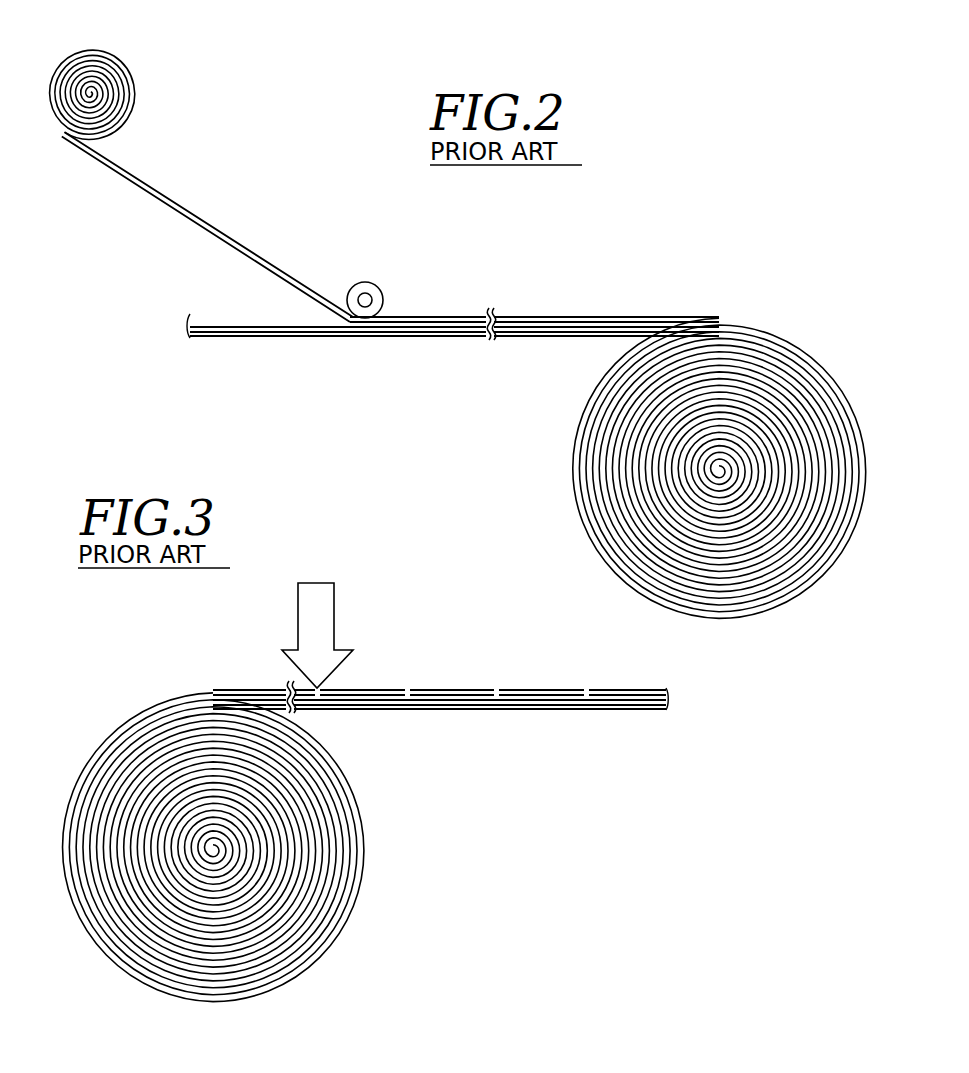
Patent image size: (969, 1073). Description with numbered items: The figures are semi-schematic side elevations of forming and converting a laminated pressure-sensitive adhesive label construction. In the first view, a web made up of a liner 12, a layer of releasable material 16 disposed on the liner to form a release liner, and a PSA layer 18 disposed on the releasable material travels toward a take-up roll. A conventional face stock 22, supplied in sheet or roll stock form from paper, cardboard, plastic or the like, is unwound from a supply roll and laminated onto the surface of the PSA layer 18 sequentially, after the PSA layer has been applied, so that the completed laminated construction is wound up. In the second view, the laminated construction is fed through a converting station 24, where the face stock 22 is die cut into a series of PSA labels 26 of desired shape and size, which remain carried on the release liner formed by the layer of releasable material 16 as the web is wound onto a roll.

In FIG. 2, the liner 12 is at (284, 337).
In FIG. 3, the liner 12 is at (587, 710).
In FIG. 2, the layer of releasable material 16 is at (205, 335).
In FIG. 3, the layer of releasable material 16 is at (545, 706).
In FIG. 2, the PSA layer 18 is at (218, 320).
In FIG. 3, the PSA layer 18 is at (478, 701).
In FIG. 2, the face stock 22 is at (188, 207).
In FIG. 3, the face stock 22 is at (420, 697).
In FIG. 3, the station 24 is at (323, 610).
In FIG. 3, the PSA labels 26 is at (594, 689).